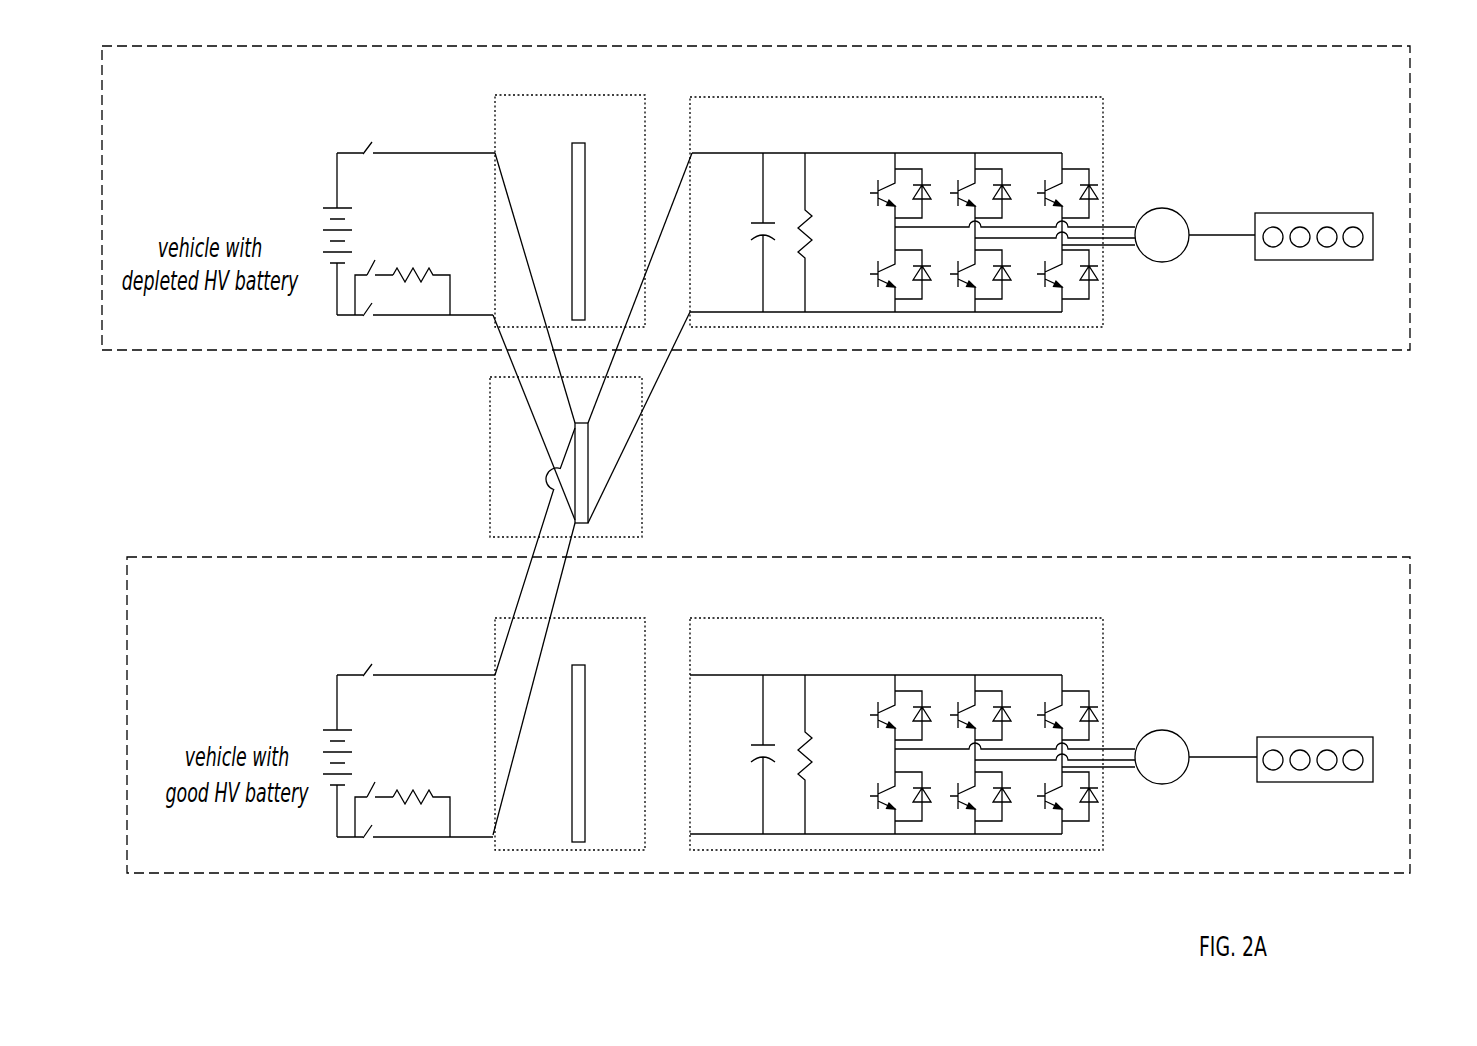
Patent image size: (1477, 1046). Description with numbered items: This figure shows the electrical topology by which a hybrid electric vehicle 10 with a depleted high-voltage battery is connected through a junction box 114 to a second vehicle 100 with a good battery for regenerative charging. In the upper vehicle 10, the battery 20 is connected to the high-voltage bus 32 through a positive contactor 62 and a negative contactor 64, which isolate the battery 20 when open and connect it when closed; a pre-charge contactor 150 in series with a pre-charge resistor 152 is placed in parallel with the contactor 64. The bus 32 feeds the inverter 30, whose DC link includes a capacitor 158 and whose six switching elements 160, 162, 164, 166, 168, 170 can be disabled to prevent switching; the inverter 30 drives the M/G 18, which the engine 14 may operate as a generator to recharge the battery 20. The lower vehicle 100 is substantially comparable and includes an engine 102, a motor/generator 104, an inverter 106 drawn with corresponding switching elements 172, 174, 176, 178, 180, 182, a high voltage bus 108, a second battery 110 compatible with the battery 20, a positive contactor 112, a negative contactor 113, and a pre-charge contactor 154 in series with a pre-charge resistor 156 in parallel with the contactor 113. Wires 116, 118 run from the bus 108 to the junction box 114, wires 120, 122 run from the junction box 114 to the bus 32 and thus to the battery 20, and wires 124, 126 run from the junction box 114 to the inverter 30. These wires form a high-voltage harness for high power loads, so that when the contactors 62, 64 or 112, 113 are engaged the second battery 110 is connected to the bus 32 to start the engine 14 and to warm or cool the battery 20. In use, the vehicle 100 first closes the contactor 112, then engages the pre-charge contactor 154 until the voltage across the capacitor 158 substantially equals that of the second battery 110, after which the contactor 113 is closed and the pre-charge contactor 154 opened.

The vehicle 10 is at (1411, 78).
The engine 14 is at (1310, 213).
The M/G 18 is at (1165, 208).
The battery 20 is at (323, 196).
The inverter 30 is at (703, 96).
The high-voltage bus 32 is at (493, 108).
The positive contactor 62 is at (356, 146).
The negative contactor 64 is at (356, 325).
The wire 120 is at (500, 166).
The wire 122 is at (509, 362).
The wire 124 is at (677, 192).
The wire 126 is at (666, 365).
The pre-charge contactor 150 is at (373, 256).
The pre-charge resistor 152 is at (418, 256).
The capacitor 158 is at (755, 203).
The switching element 160 is at (891, 150).
The switching element 162 is at (895, 316).
The switching element 164 is at (971, 150).
The switching element 166 is at (975, 316).
The switching element 168 is at (1058, 150).
The switching element 170 is at (1062, 316).
The junction box 114 is at (643, 507).
The second vehicle 100 is at (1411, 598).
The engine 102 is at (1310, 737).
The motor/generator (M/G) 104 is at (1165, 730).
The inverter 106 is at (783, 617).
The high voltage bus 108 is at (493, 628).
The second battery 110 is at (323, 718).
The positive contactor 112 is at (356, 668).
The negative contactor 113 is at (357, 846).
The wire 116 is at (520, 593).
The wire 118 is at (554, 605).
The pre-charge contactor 154 is at (374, 778).
The pre-charge resistor 156 is at (423, 778).
The switch (upper, phase A) 172 is at (891, 672).
The switch (lower, phase A) 174 is at (895, 838).
The switch (upper, phase B) 176 is at (971, 672).
The switch (lower, phase B) 178 is at (975, 838).
The switch (upper, phase C) 180 is at (1058, 672).
The switch (lower, phase C) 182 is at (1062, 838).